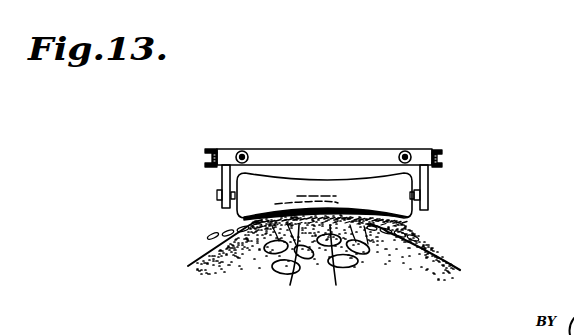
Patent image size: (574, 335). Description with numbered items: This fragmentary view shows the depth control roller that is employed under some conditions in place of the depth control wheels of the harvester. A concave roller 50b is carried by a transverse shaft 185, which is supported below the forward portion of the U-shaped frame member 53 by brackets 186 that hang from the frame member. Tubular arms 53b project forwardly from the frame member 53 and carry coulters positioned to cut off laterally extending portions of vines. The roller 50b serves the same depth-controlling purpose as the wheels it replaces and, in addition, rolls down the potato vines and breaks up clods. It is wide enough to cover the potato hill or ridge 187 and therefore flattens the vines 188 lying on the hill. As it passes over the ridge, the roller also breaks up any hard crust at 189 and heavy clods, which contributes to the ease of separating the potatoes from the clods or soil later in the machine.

The U-shaped frame member 53 is at (438, 152).
The tubular arms 53b is at (244, 150).
The brackets 186 is at (222, 182).
The transverse shaft 185 is at (430, 196).
The concave roller 50b is at (405, 212).
The vines 188 is at (250, 220).
The hard crust 189 is at (292, 282).
The potato hill or ridge 187 is at (334, 282).